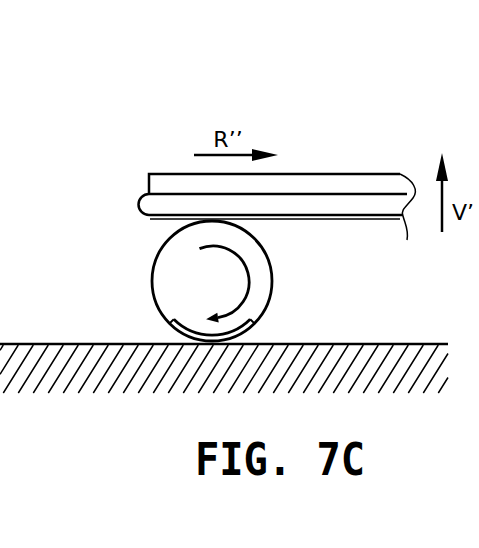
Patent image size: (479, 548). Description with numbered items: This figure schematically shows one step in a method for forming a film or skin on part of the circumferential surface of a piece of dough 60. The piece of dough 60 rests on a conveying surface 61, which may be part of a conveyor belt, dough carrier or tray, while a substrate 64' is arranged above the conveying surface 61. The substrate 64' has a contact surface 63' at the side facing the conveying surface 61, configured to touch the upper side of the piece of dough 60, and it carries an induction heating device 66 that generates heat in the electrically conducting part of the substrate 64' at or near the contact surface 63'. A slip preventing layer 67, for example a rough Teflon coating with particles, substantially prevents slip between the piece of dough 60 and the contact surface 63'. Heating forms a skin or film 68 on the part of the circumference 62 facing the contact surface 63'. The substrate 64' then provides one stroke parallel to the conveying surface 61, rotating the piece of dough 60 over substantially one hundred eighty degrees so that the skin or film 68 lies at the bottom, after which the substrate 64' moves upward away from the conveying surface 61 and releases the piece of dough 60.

The piece of dough 60 is at (222, 281).
The conveying surface 61 is at (29, 343).
The part of the circumference 62 is at (271, 262).
The contact surface 63' is at (285, 260).
The substrate 64' is at (278, 157).
The induction heating device 66 is at (158, 180).
The slip preventing layer 67 is at (358, 222).
The skin or film 68 is at (186, 330).